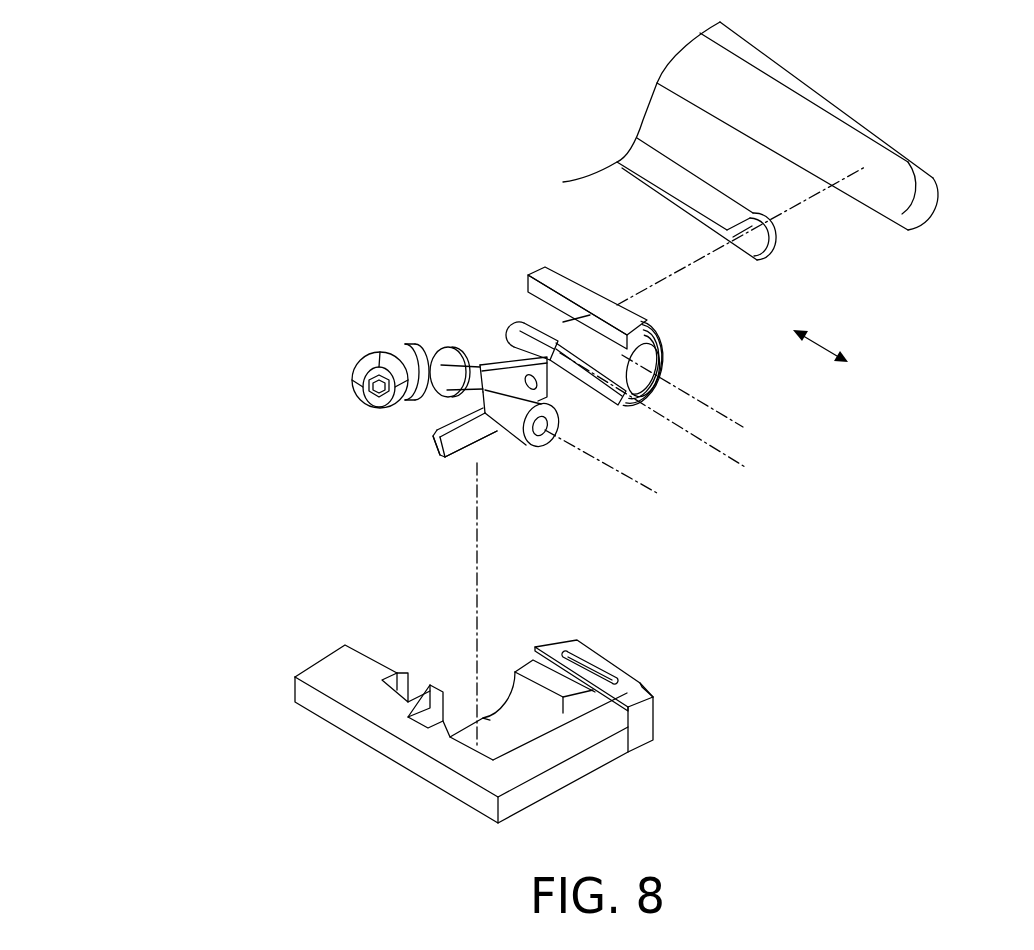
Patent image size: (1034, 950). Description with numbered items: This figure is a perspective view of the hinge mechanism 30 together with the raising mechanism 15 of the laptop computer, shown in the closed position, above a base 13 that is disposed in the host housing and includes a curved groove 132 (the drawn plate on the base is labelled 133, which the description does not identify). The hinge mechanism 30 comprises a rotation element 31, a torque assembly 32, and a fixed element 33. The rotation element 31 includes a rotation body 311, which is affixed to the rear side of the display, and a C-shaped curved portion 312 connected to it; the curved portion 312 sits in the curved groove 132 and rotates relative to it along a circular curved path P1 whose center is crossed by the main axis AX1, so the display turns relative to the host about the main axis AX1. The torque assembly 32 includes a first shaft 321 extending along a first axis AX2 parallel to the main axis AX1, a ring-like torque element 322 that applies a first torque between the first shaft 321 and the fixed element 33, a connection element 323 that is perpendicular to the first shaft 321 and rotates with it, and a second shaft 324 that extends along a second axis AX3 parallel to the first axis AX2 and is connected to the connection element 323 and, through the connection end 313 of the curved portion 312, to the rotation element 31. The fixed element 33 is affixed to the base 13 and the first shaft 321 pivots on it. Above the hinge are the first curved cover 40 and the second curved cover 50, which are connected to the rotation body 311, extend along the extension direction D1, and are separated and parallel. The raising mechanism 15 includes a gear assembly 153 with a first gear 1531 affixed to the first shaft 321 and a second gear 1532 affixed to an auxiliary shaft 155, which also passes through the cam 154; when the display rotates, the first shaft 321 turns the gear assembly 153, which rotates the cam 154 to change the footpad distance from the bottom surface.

The base 13 is at (645, 720).
The curved groove 132 is at (620, 671).
The plate 133 is at (557, 643).
The raising mechanism 15 is at (302, 437).
The gear assembly 153 is at (238, 312).
The first gear 1531 is at (435, 350).
The second gear 1532 is at (392, 347).
The cam 154 is at (357, 370).
The auxiliary shaft 155 is at (372, 392).
The hinge mechanism 30 is at (66, 378).
The rotation element 31 is at (533, 262).
The rotation body 311 is at (566, 277).
The curved portion 312 is at (658, 320).
The connection end 313 is at (603, 388).
The torque assembly 32 is at (498, 330).
The first shaft 321 is at (538, 437).
The torque element 322 is at (433, 437).
The connection element 323 is at (480, 362).
The second shaft 324 is at (563, 322).
The fixed element 33 is at (460, 455).
The first curved cover 40 is at (937, 187).
The second curved cover 50 is at (775, 243).
The curved path P1 is at (670, 352).
The main axis AX1 is at (715, 409).
The first axis AX2 is at (598, 587).
The second axis AX3 is at (684, 425).
The extension direction D1 is at (828, 336).